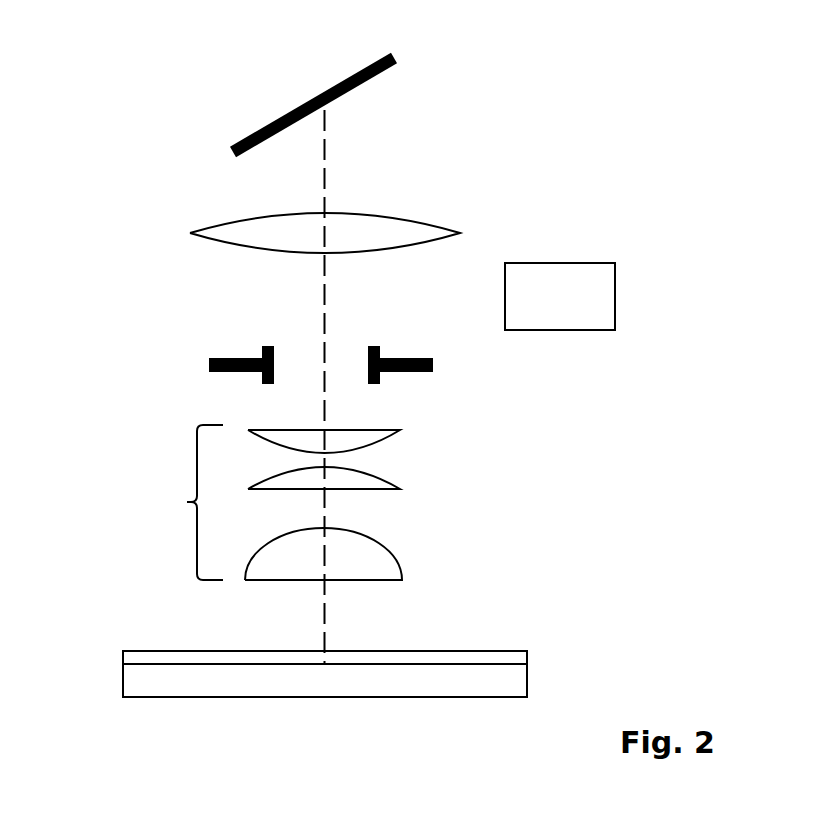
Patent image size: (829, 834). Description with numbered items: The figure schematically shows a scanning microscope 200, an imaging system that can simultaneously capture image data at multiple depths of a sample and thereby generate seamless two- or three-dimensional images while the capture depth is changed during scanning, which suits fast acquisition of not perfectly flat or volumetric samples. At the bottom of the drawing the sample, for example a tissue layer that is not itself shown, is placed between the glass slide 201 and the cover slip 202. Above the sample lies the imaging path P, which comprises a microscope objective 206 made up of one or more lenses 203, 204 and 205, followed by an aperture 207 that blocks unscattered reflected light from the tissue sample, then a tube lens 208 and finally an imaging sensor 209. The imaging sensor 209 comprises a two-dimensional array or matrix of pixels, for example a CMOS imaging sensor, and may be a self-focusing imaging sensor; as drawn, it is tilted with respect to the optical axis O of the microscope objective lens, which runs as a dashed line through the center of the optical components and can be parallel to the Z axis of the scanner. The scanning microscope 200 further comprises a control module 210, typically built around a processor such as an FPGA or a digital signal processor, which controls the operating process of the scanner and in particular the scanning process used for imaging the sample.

The scanning microscope 200 is at (532, 123).
The glass slide 201 is at (523, 688).
The cover slip 202 is at (523, 658).
The lens 203 is at (383, 577).
The lens 204 is at (383, 485).
The lens 205 is at (383, 438).
The microscope objective 206 is at (187, 502).
The aperture 207 is at (293, 372).
The tube lens 208 is at (196, 236).
The imaging sensor 209 is at (233, 153).
The control module 210 is at (607, 320).
The imaging path P is at (326, 164).
The optical axis O is at (326, 312).